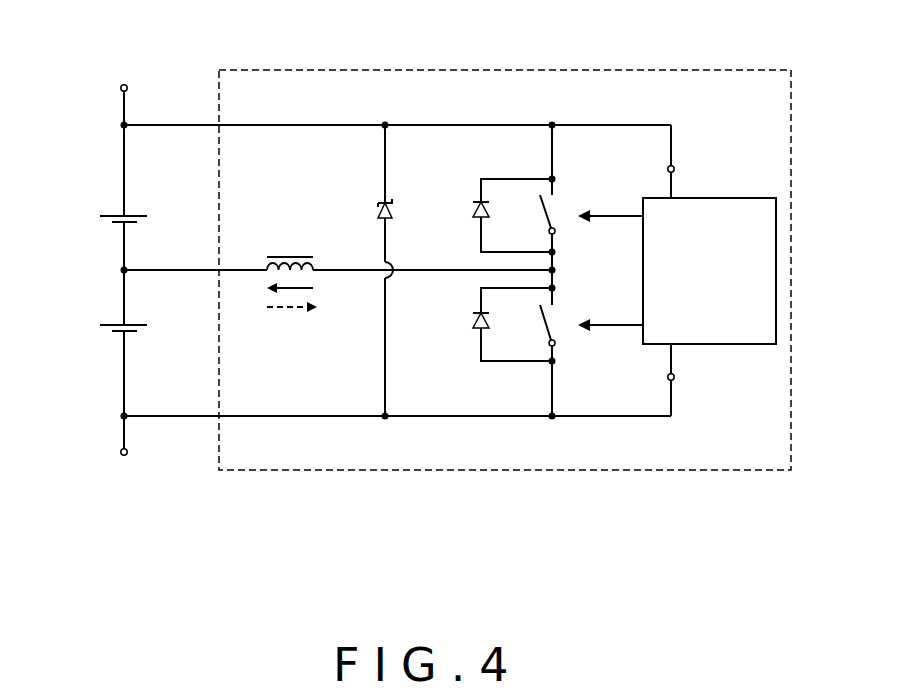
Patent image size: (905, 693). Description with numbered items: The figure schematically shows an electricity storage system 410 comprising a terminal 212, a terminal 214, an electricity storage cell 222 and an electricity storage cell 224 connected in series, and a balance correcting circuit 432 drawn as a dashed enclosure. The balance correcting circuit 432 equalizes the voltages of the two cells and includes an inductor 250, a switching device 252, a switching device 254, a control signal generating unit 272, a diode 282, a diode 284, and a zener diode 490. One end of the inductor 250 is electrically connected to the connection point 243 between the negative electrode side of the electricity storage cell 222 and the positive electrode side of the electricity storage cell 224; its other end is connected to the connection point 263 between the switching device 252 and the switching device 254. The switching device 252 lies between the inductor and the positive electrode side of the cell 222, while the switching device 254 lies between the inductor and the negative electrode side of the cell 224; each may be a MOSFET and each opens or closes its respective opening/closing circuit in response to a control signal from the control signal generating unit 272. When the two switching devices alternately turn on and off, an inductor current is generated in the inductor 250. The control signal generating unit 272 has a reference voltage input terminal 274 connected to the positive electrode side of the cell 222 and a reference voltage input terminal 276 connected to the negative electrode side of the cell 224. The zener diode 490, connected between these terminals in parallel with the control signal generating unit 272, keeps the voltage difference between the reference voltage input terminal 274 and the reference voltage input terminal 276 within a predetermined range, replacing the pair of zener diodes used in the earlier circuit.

The electricity storage system 410 is at (88, 36).
The terminal 212 is at (148, 70).
The terminal 214 is at (128, 455).
The electricity storage cell 222 is at (101, 227).
The electricity storage cell 224 is at (101, 337).
The connection point 243 is at (128, 266).
The inductor 250 is at (293, 251).
The zener diode 490 is at (372, 198).
The diode 282 is at (469, 207).
The diode 284 is at (474, 330).
The switching device 252 is at (541, 218).
The switching device 254 is at (541, 331).
The connection point 263 is at (562, 277).
The reference voltage input terminal 274 is at (675, 168).
The reference voltage input terminal 276 is at (675, 380).
The control signal generating unit 272 is at (718, 345).
The balance correcting circuit 432 is at (725, 70).